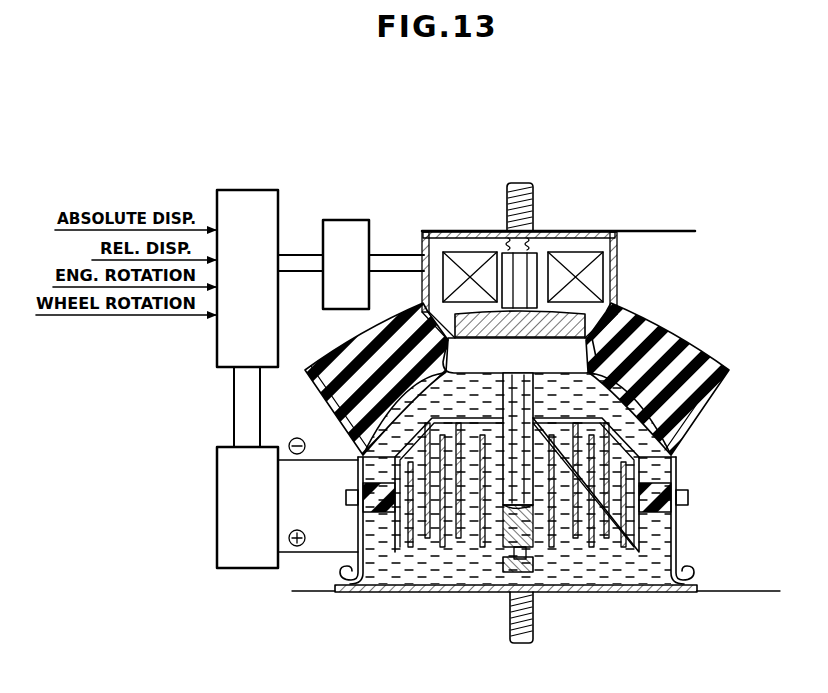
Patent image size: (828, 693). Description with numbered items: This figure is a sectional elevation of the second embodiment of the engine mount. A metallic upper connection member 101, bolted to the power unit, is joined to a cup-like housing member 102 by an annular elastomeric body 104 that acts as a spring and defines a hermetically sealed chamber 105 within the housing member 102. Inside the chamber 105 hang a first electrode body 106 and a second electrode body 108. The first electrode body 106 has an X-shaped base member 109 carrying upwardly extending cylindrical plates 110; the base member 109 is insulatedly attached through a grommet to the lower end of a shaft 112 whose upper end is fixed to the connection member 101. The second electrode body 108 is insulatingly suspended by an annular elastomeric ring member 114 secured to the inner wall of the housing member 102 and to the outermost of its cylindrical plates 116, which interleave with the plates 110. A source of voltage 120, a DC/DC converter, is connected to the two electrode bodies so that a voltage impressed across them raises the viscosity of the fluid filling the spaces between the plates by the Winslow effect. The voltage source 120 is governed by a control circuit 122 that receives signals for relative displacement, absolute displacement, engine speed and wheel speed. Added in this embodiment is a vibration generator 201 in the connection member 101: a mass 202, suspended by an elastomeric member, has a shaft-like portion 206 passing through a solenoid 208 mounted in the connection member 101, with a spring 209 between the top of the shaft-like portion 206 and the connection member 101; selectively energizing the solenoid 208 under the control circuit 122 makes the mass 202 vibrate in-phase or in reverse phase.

The upper connection member 101 is at (618, 262).
The housing member 102 is at (674, 468).
The annular elastomeric body 104 is at (702, 372).
The hermetically sealed chamber 105 is at (600, 372).
The first electrode body 106 is at (620, 565).
The second electrode body 108 is at (598, 407).
The X-shaped base member 109 is at (578, 552).
The cylindrical plates 110 is at (480, 521).
The shaft 112 is at (511, 386).
The annular elastomeric ring member 114 is at (656, 507).
The cylindrical plates of second electrode body 116 is at (423, 528).
The source of voltage 120 is at (224, 490).
The control circuit 122 is at (266, 333).
The vibration generator 201 is at (490, 249).
The mass 202 is at (525, 322).
The shaft-like portion 206 is at (522, 275).
The solenoid 208 is at (462, 262).
The spring 209 is at (528, 247).